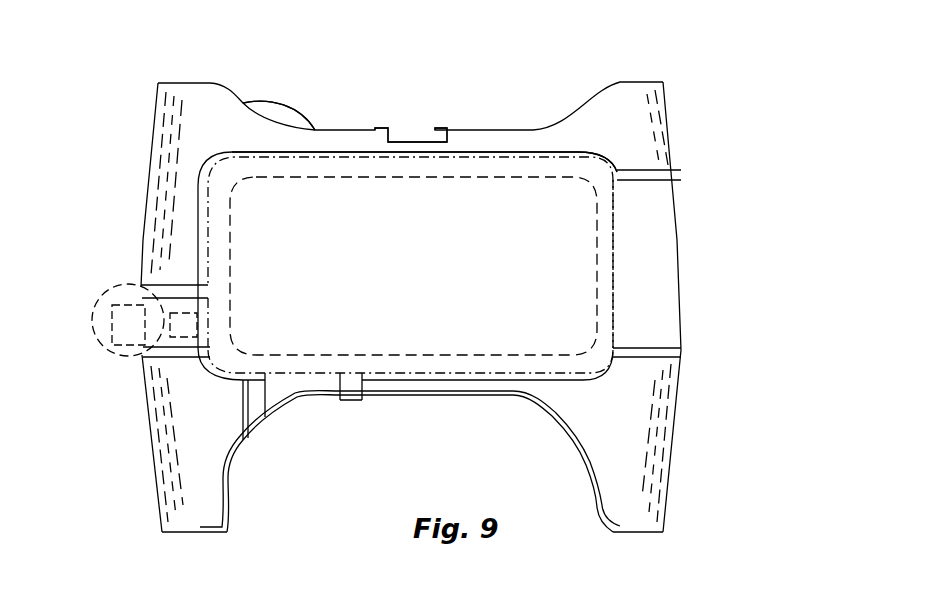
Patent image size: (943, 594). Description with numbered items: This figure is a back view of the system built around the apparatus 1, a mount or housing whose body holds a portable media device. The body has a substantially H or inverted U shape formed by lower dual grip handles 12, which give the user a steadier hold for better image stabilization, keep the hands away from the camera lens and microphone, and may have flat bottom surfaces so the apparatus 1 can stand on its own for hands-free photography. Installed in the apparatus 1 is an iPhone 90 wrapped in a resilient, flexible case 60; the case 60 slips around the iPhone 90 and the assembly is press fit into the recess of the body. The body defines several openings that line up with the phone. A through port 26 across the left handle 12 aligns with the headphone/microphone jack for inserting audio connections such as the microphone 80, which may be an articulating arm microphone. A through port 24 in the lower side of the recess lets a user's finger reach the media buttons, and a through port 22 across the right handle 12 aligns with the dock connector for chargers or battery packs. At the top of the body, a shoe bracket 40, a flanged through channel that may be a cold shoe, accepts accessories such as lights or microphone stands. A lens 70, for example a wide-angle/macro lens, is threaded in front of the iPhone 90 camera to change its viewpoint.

The apparatus 1 is at (718, 87).
The lower dual grip handles 12 is at (163, 452).
The through port 22 is at (640, 270).
The through port 24 is at (283, 388).
The through port 26 is at (137, 278).
The shoe bracket 40 is at (413, 127).
The case 60 is at (477, 210).
The iPhone 90 is at (424, 91).
The lens 70 is at (288, 99).
The microphone 80 is at (97, 318).